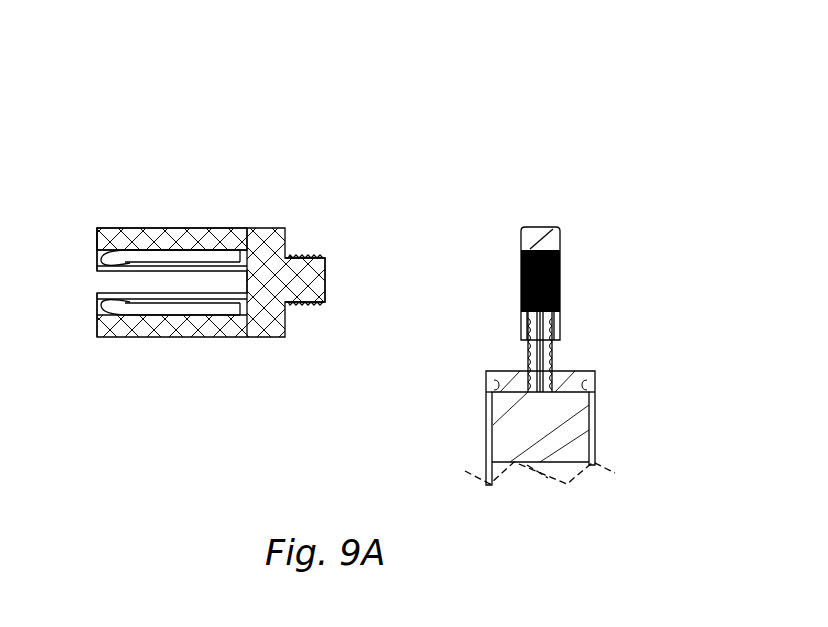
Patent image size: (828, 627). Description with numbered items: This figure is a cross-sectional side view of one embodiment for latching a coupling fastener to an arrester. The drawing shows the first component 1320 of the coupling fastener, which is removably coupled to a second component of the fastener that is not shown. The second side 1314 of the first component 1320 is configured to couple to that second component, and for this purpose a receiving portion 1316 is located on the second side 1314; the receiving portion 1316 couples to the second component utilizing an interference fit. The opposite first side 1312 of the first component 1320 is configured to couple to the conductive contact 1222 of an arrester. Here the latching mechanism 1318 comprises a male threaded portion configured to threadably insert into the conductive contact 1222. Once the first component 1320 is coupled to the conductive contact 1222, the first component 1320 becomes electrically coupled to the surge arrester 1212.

The first side 1312 is at (320, 192).
The second side 1314 is at (112, 213).
The receiving portion 1316 is at (183, 300).
The latching mechanism 1318 is at (305, 305).
The first component 1320 is at (188, 200).
The conductive contact 1222 is at (538, 228).
The surge arrester 1212 is at (578, 450).